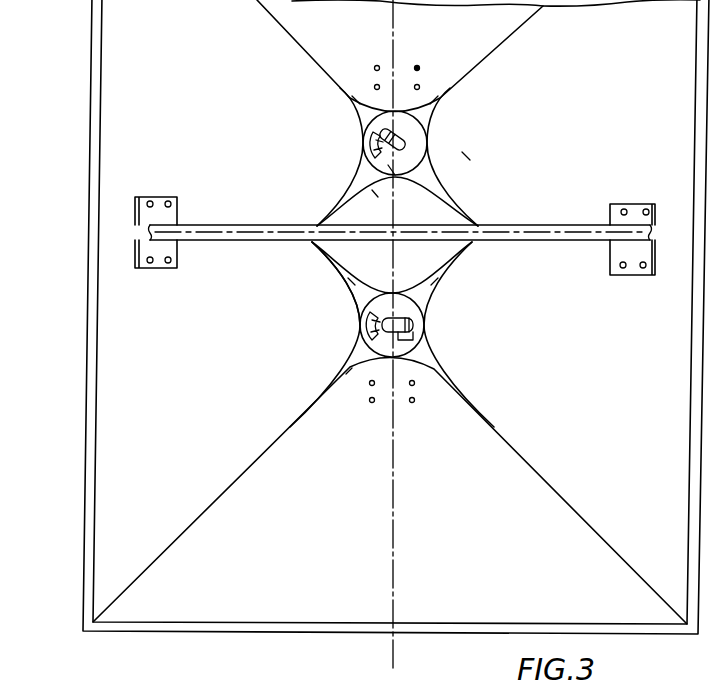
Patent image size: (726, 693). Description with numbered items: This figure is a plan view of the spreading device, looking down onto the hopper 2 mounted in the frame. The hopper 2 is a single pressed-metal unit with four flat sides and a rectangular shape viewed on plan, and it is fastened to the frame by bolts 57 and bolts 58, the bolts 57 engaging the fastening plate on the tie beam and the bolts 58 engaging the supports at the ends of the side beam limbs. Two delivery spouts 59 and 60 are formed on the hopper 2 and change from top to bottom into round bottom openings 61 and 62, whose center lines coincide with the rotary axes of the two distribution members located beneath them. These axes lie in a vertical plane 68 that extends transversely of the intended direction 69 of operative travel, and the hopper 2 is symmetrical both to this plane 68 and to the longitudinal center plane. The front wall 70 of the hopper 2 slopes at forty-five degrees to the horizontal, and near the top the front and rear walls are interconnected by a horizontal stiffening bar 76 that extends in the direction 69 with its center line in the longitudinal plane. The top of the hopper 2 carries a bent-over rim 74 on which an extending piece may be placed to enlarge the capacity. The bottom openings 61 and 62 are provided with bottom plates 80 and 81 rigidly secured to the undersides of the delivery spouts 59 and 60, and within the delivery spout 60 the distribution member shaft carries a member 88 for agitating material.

The hopper 2 is at (127, 152).
The bolts 57 is at (167, 200).
The bolts 58 is at (419, 67).
The delivery spout 59 is at (322, 150).
The delivery spout 60 is at (318, 371).
The bottom opening 61 is at (445, 152).
The bottom opening 62 is at (362, 323).
The vertical plane 68 is at (390, 578).
The direction of operative travel 69 is at (68, 338).
The front wall 70 is at (113, 88).
The bent-over rim 74 is at (88, 453).
The stiffening bar 76 is at (213, 232).
The bottom plate 80 is at (391, 168).
The bottom plate 81 is at (402, 300).
The agitating member 88 is at (430, 143).